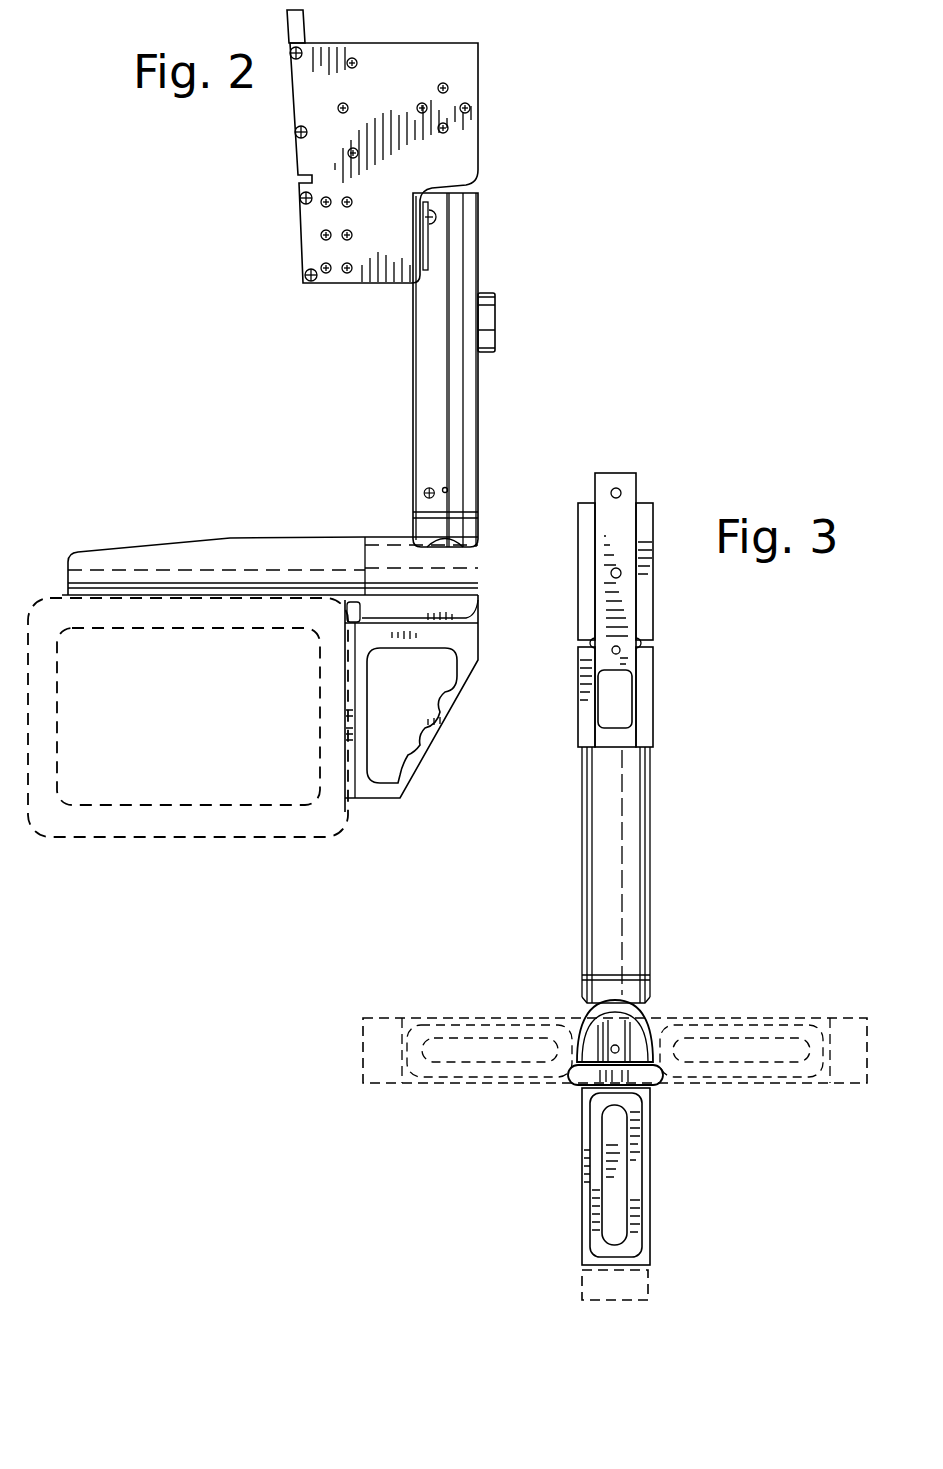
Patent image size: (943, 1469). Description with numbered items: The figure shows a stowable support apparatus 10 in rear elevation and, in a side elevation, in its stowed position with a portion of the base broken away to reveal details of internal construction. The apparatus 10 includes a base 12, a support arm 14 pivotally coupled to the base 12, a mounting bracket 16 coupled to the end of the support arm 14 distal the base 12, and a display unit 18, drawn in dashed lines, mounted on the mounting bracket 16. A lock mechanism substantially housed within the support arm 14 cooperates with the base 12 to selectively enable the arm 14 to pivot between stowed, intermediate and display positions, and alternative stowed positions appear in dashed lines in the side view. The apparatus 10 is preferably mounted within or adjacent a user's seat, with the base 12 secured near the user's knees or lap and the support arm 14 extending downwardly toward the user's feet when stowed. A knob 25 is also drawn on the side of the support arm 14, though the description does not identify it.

In FIG. 2, the stowable support apparatus 10 is at (213, 328).
In FIG. 3, the stowable support apparatus 10 is at (520, 938).
In FIG. 2, the base 12 is at (292, 158).
In FIG. 3, the base 12 is at (655, 695).
In FIG. 2, the support arm 14 is at (412, 386).
In FIG. 3, the support arm 14 is at (652, 860).
In FIG. 2, the mounting bracket 16 is at (255, 537).
In FIG. 3, the mounting bracket 16 is at (650, 1165).
In FIG. 2, the display unit 18 is at (188, 838).
In FIG. 3, the display unit 18 is at (650, 1298).
In FIG. 2, the adjustment knob 25 is at (495, 322).